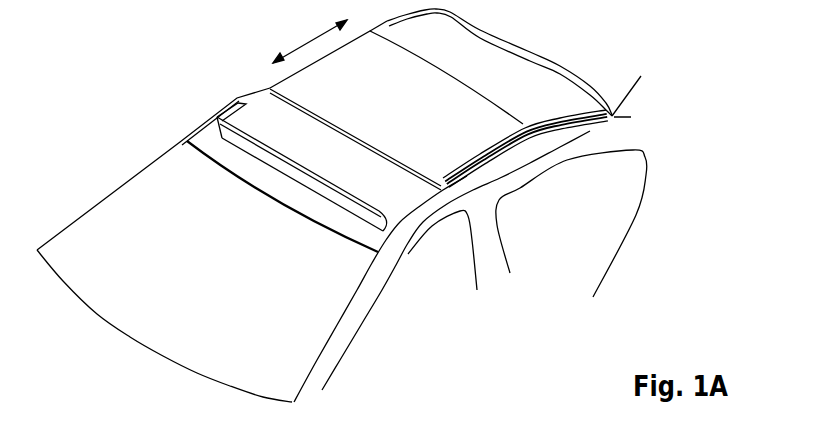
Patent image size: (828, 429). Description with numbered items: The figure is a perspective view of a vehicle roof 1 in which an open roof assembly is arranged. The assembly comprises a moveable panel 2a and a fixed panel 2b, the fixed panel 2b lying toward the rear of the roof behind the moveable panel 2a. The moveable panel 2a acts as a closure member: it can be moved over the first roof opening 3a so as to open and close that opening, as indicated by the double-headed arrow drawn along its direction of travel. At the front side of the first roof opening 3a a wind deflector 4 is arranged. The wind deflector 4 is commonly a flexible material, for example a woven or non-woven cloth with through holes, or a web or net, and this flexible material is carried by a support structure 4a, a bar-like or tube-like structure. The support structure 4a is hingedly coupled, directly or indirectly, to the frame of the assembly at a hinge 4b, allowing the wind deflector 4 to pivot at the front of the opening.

The vehicle roof 1 is at (603, 131).
The moveable panel 2a is at (409, 103).
The fixed panel 2b is at (508, 77).
The first roof opening 3a is at (278, 131).
The wind deflector 4 is at (237, 143).
The support structure 4a is at (352, 197).
The hinge 4b is at (235, 101).